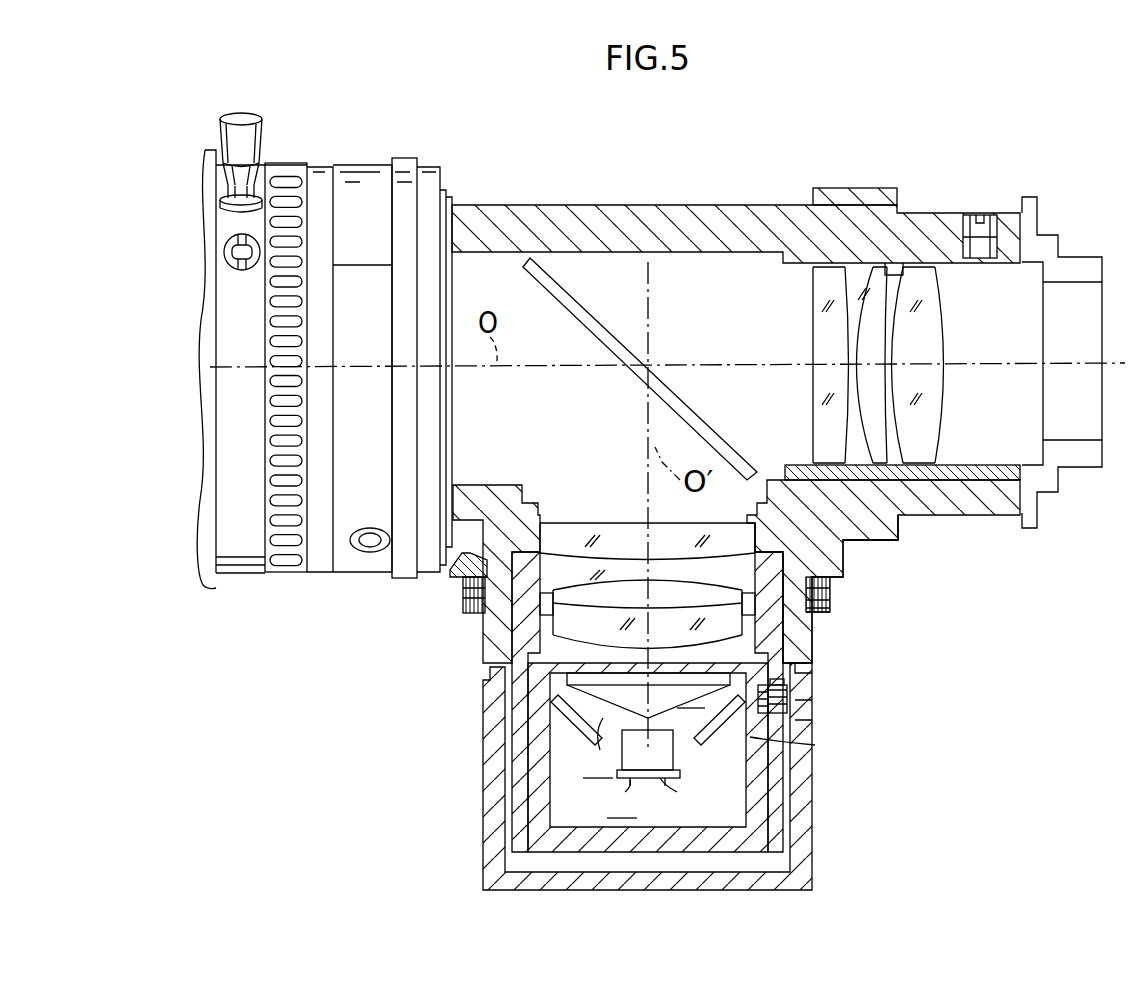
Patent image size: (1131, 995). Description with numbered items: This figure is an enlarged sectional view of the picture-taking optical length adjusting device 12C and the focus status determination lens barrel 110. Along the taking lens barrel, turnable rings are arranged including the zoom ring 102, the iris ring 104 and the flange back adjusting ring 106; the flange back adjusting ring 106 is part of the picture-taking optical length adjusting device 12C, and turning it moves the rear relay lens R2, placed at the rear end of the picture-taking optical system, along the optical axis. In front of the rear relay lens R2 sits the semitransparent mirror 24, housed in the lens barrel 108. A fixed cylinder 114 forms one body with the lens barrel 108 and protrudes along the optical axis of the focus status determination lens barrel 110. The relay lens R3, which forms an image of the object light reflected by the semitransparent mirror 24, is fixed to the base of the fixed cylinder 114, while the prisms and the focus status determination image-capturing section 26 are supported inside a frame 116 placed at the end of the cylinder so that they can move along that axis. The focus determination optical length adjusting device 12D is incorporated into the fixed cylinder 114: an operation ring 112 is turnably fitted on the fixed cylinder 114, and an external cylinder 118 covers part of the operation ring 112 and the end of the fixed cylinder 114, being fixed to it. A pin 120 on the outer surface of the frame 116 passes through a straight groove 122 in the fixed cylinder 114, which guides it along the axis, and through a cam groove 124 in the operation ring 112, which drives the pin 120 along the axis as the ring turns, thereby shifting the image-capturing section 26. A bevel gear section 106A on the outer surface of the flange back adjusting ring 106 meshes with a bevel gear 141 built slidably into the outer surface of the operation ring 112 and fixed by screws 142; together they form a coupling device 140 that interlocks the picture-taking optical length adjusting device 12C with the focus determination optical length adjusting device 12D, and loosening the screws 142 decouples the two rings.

The zoom ring 102 is at (270, 585).
The iris ring 104 is at (410, 585).
The flange back adjusting ring 106 is at (872, 190).
The bevel gear section 106A is at (847, 553).
The lens barrel 108 is at (728, 201).
The focus status determination lens barrel 110 is at (463, 782).
The operation ring 112 is at (477, 632).
The fixed cylinder 114 is at (497, 647).
The frame 116 is at (748, 820).
The external cylinder 118 is at (812, 840).
The pin 120 is at (864, 687).
The straight groove 122 is at (787, 716).
The cam groove 124 is at (786, 690).
The picture-taking optical length adjusting device 12C is at (992, 184).
The focus determination optical length adjusting device 12D is at (810, 712).
The coupling device 140 is at (874, 588).
The bevel gear 141 is at (820, 600).
The screws 142 is at (832, 604).
The semitransparent mirror 24 is at (718, 432).
The focus status determination image-capturing section 26 is at (690, 750).
The rear relay lens R2 is at (927, 343).
The relay lens R3 is at (615, 573).